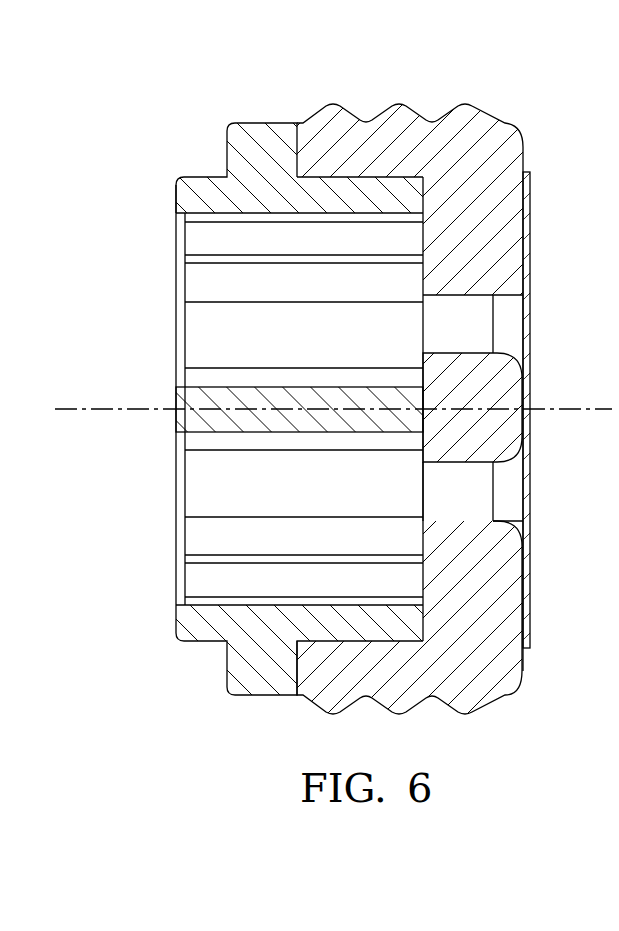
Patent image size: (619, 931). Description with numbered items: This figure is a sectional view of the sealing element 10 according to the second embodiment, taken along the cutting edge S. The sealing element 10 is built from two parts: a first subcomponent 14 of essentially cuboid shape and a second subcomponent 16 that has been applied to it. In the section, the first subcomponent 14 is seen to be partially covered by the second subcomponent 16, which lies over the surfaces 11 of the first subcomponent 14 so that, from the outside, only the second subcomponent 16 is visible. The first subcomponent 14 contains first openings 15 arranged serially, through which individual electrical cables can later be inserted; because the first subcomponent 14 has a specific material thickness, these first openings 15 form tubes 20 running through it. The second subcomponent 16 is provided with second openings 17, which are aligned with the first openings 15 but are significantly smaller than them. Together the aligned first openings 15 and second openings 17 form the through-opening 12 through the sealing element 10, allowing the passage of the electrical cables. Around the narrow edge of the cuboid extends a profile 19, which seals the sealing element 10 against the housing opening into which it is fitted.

The sealing element 10 is at (334, 369).
The surfaces 11 is at (320, 172).
The through-opening 12 is at (525, 315).
The first subcomponent 14 is at (230, 188).
The first openings 15 is at (205, 333).
The second subcomponent 16 is at (402, 135).
The second openings 17 is at (478, 495).
The profile 19 is at (463, 117).
The tubes 20 is at (205, 470).